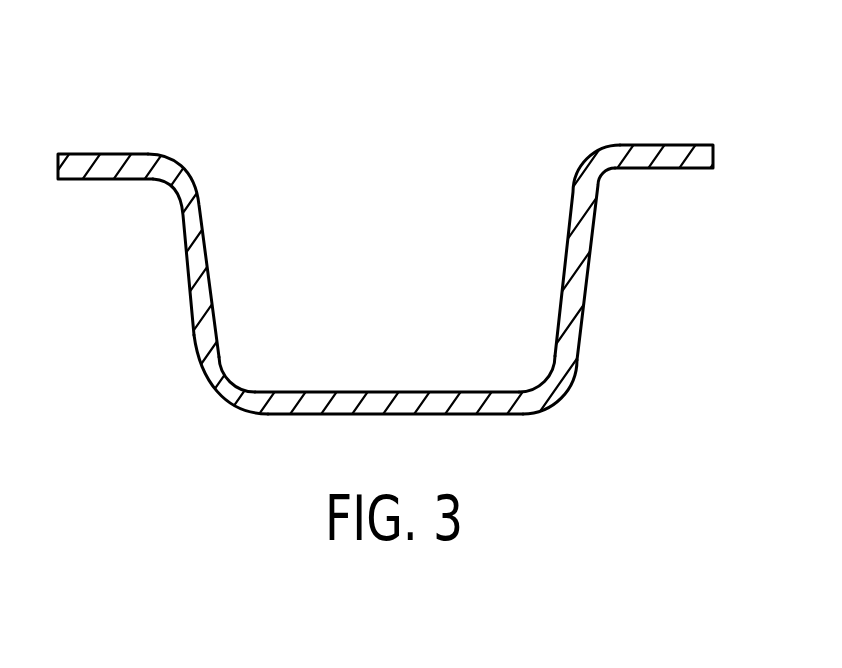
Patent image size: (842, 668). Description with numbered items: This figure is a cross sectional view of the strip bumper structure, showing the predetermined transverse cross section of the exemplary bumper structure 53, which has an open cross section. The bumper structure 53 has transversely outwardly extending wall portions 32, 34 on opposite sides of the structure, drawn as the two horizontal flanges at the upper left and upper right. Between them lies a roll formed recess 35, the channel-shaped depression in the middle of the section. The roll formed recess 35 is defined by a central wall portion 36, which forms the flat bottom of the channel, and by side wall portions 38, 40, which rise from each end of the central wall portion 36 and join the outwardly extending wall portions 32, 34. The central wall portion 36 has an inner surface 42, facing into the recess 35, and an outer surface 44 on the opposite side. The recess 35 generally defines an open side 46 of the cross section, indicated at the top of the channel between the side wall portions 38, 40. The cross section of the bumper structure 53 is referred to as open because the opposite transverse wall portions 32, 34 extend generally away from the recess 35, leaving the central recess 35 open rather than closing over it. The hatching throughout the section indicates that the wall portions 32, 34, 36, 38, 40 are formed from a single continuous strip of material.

The transversely outwardly extending wall portion 32 is at (98, 174).
The transversely outwardly extending wall portion 34 is at (680, 162).
The roll formed recess 35 is at (517, 155).
The central wall portion 36 is at (492, 400).
The side wall portion 38 is at (189, 298).
The side wall portion 40 is at (578, 305).
The inner surface 42 is at (376, 393).
The outer surface 44 is at (372, 415).
The open side 46 is at (487, 100).
The bumper structure 53 is at (354, 100).